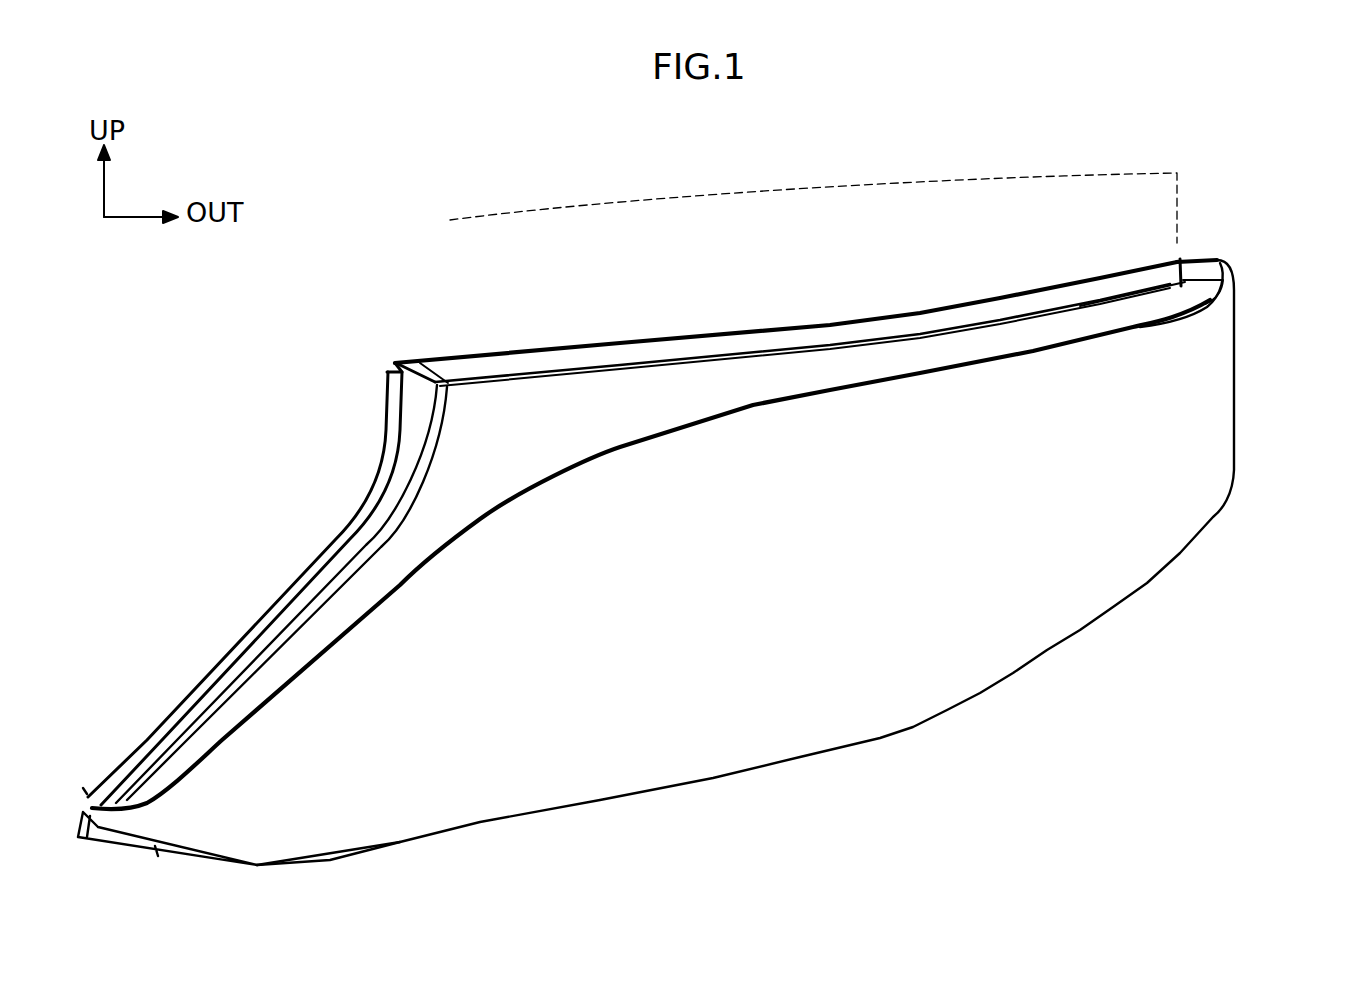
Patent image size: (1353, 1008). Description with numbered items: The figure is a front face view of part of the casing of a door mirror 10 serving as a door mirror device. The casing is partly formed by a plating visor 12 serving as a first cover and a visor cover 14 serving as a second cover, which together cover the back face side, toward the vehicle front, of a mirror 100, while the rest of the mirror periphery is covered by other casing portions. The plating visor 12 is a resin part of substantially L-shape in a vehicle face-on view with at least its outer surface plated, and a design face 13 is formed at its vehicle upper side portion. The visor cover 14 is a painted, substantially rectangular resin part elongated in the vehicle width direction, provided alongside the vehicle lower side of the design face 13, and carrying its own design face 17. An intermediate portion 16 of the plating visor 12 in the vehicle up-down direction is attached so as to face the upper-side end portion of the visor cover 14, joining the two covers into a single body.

The door mirror 10 is at (1236, 197).
The plating visor 12 is at (748, 343).
The design face 13 is at (497, 414).
The visor cover 14 is at (698, 745).
The intermediate portion 16 is at (728, 385).
The design face 17 is at (622, 567).
The mirror 100 is at (930, 178).